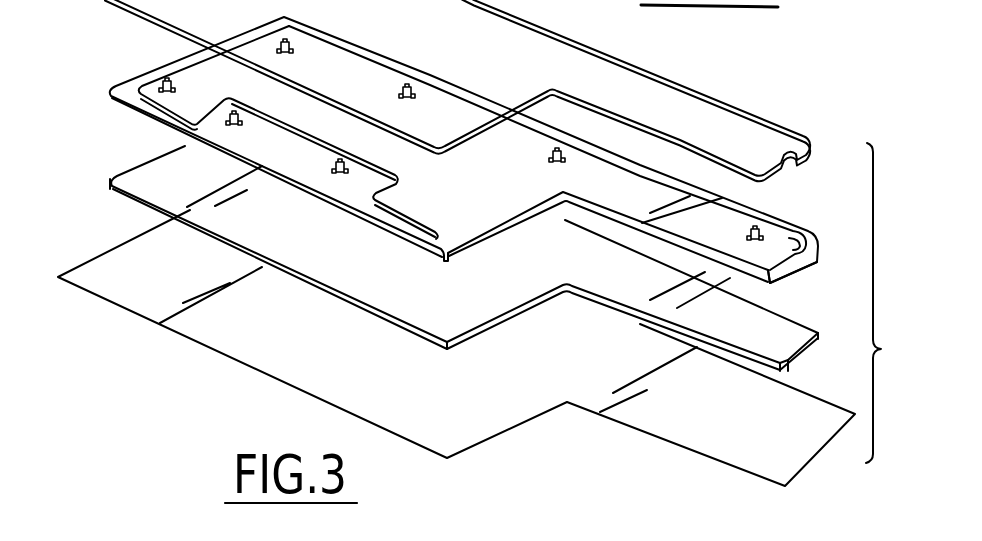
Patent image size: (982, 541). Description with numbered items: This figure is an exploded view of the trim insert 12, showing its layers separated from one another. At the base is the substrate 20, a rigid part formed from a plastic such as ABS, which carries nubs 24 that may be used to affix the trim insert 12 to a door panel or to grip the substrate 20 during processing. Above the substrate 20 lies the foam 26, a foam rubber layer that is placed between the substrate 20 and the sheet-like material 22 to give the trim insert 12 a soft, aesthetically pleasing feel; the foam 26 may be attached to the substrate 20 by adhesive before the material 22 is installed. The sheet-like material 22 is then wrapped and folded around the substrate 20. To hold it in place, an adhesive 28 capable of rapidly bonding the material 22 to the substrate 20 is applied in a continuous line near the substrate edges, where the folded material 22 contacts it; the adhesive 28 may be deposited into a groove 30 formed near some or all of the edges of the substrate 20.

The trim insert 12 is at (896, 303).
The substrate 20 is at (820, 260).
The sheet-like material 22 is at (810, 462).
The nubs 24 is at (410, 87).
The foam 26 is at (820, 333).
The adhesive 28 is at (725, 107).
The groove 30 is at (795, 244).